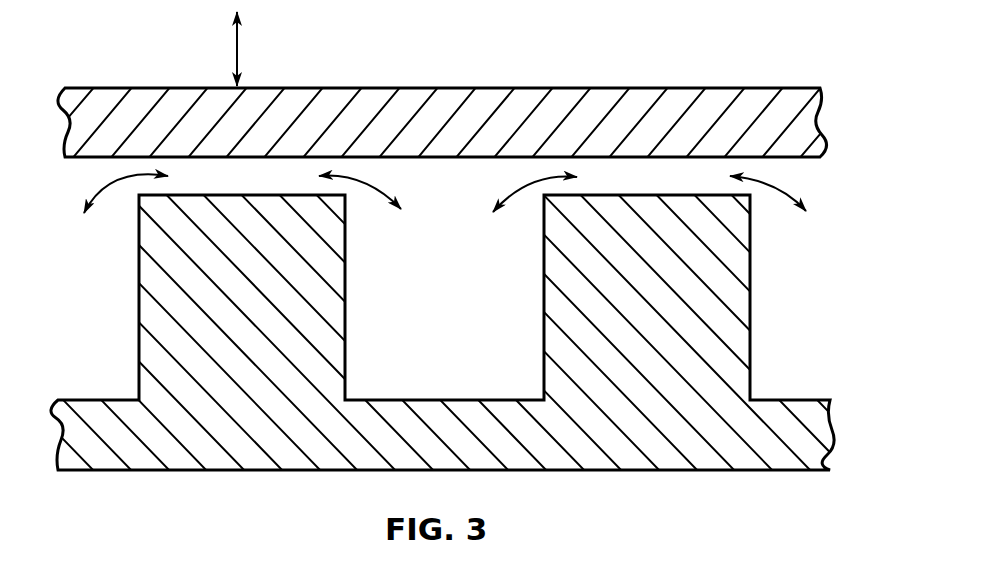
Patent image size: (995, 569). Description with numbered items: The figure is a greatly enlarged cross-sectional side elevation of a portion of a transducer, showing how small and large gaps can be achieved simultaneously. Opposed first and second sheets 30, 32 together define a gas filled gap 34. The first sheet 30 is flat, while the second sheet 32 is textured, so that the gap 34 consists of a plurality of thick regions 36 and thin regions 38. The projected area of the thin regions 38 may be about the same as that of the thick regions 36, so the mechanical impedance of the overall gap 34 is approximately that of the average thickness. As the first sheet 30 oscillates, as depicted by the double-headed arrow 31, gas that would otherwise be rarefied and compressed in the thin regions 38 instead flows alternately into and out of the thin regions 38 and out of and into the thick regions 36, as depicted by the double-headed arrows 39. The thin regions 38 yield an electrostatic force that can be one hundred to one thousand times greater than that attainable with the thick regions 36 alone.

The first sheet 30 is at (460, 84).
The double-headed arrow 31 is at (238, 46).
The second sheet 32 is at (756, 324).
The gas filled gap 34 is at (825, 206).
The thick regions 36 is at (112, 331).
The thin regions 38 is at (262, 190).
The double-headed arrows 39 is at (122, 186).